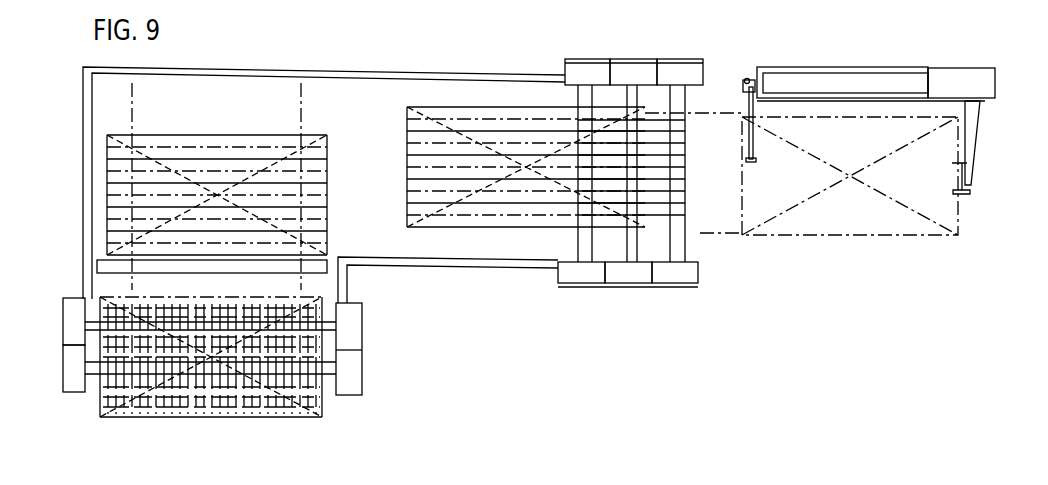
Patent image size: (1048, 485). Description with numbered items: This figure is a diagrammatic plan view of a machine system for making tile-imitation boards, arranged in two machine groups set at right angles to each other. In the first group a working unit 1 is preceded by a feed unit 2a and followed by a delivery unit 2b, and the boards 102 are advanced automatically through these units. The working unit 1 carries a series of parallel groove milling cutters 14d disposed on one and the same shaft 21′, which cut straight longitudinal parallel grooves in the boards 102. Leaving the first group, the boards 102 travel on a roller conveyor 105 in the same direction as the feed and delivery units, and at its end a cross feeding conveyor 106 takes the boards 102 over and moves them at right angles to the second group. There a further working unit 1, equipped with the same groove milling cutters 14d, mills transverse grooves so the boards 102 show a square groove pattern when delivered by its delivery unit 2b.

The working unit 1 is at (628, 70).
The feed unit 2a is at (675, 68).
The delivery unit 2b is at (584, 66).
The groove milling cutters 14d is at (645, 147).
The shaft 21′ is at (633, 247).
The boards 102 is at (233, 143).
The roller conveyor 105 is at (411, 86).
The cross feeding conveyor 106 is at (283, 83).